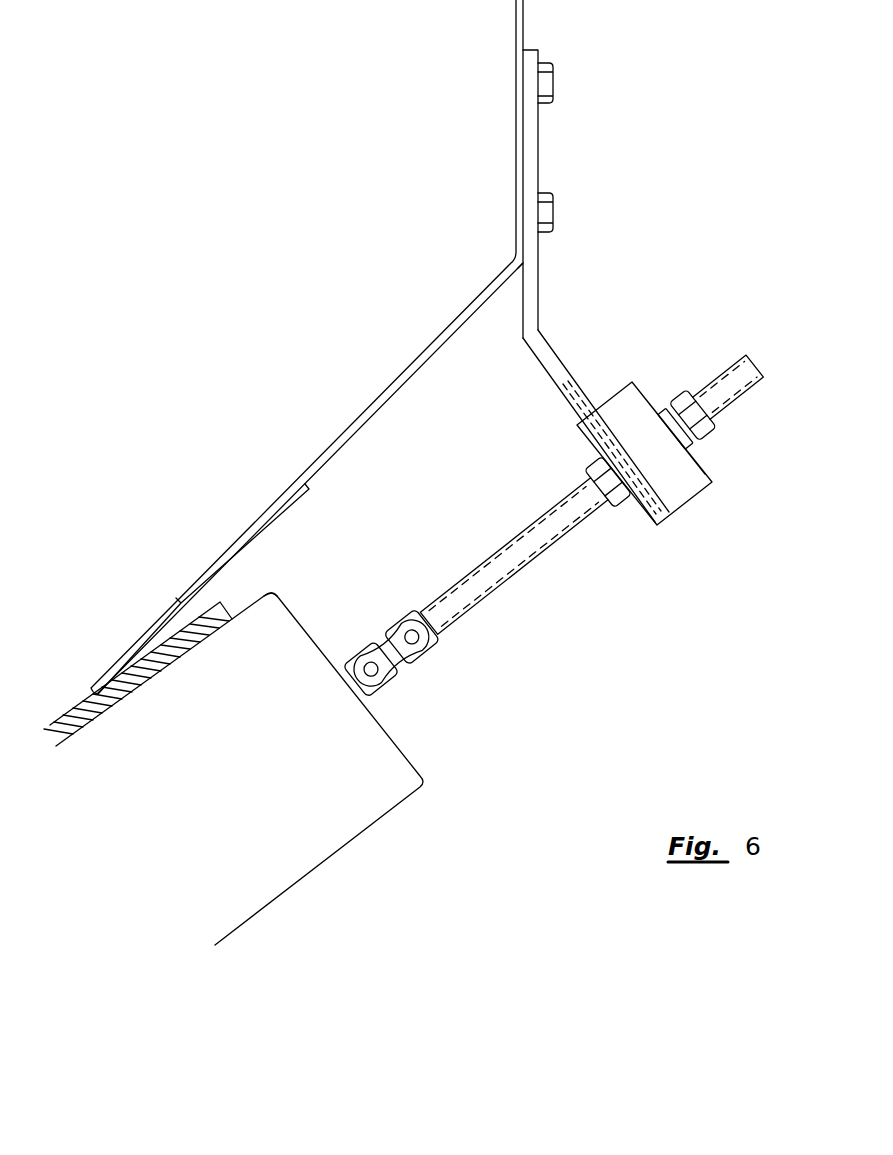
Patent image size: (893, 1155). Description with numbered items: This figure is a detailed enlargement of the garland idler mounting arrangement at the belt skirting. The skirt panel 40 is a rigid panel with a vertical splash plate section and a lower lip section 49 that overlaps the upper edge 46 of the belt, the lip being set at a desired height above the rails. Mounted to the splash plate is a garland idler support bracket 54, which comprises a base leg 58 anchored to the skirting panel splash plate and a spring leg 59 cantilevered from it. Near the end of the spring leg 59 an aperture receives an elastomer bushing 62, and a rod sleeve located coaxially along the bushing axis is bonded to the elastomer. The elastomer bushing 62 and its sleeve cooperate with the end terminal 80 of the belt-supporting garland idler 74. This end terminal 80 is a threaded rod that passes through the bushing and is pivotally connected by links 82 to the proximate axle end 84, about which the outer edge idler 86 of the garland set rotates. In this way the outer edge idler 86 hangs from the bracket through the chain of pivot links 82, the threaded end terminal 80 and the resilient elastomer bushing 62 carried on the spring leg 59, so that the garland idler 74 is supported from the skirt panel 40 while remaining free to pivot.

The skirt panel 40 is at (438, 343).
The upper edge of the belt 46 is at (250, 598).
The lower lip section 49 is at (143, 637).
The garland idler support bracket 54 is at (534, 125).
The base leg 58 is at (528, 257).
The spring leg 59 is at (567, 382).
The elastomer bushing 62 is at (685, 488).
The garland idler 74 is at (483, 871).
The end terminal 80 is at (563, 518).
The pivot link 82 is at (395, 656).
The axle end 84 is at (383, 693).
The outer edge idler 86 is at (280, 770).